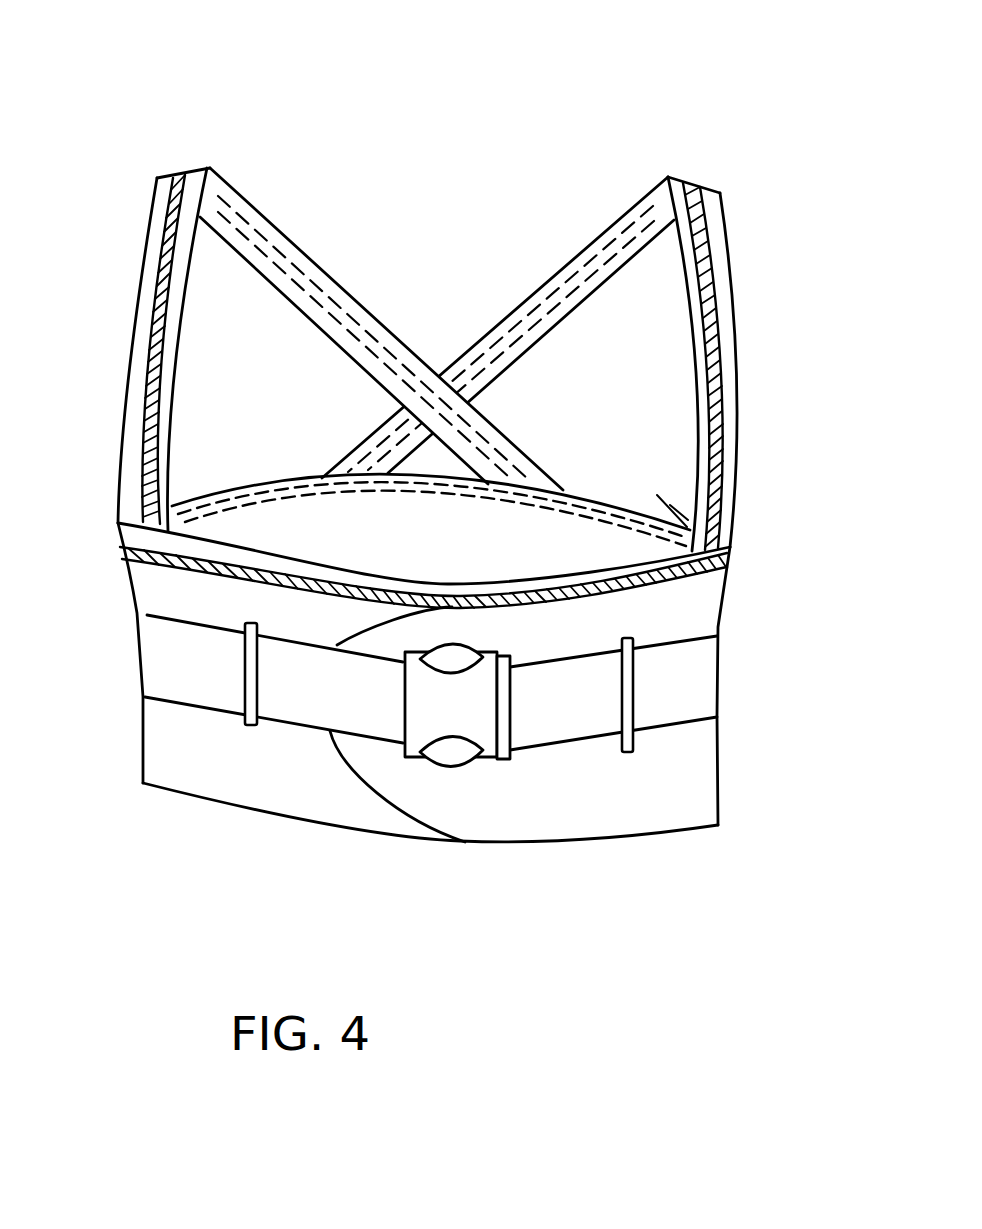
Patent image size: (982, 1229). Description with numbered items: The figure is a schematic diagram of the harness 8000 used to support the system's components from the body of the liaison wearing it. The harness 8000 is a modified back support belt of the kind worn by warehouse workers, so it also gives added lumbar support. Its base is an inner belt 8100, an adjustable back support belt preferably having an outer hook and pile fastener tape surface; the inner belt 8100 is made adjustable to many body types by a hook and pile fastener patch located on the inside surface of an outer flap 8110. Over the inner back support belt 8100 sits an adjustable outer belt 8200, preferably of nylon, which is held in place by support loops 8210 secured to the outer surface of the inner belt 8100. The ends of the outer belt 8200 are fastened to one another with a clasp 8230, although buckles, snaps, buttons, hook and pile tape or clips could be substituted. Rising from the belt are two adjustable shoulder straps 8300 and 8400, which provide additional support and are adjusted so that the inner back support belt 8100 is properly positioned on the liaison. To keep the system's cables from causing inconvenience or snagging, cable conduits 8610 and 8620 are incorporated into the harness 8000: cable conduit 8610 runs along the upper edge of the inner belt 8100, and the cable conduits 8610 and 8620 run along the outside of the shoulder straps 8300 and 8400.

The harness 8000 is at (363, 133).
The inner belt 8100 is at (690, 607).
The outer flap 8110 is at (330, 740).
The outer belt 8200 is at (682, 683).
The support loops 8210 is at (245, 718).
The clasp 8230 is at (420, 707).
The shoulder strap 8300 is at (738, 327).
The shoulder strap 8400 is at (187, 312).
The cable conduit 8610 is at (153, 327).
The cable conduit 8620 is at (710, 400).